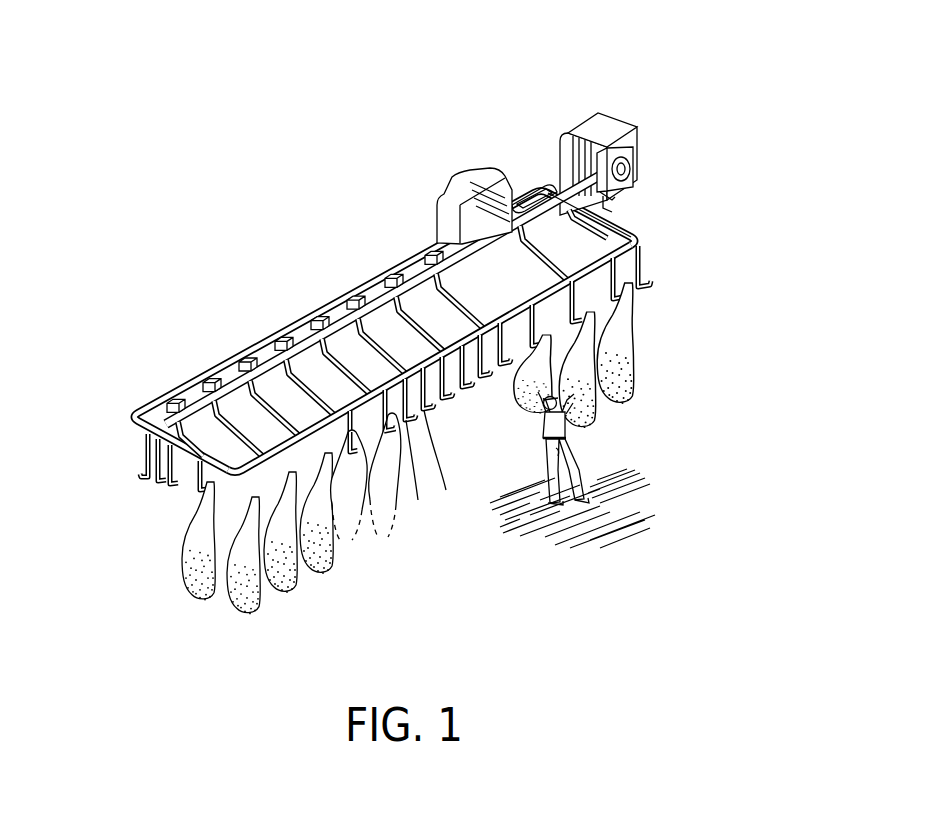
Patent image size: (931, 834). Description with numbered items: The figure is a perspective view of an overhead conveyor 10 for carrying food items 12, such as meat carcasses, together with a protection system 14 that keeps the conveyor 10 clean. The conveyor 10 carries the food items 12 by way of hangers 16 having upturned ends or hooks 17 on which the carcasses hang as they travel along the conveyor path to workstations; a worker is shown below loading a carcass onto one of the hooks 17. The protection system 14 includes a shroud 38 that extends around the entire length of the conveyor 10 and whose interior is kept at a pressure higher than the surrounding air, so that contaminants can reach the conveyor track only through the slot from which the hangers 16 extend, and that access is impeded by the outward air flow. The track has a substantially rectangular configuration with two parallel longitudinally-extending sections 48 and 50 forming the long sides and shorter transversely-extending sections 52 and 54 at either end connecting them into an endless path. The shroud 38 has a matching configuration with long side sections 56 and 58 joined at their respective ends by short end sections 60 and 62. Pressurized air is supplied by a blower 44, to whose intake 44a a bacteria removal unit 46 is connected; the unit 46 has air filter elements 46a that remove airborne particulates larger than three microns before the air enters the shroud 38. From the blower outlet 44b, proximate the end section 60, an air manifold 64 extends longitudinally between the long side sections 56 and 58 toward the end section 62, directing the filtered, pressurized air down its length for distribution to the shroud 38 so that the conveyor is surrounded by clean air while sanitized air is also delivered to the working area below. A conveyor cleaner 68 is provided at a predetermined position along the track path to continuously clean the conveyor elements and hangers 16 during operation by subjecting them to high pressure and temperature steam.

The conveyor 10 is at (430, 284).
The food items 12 is at (240, 614).
The protection system 14 is at (192, 362).
The hangers 16 is at (424, 420).
The hooks 17 is at (648, 285).
The shroud 38 is at (328, 306).
The blower 44 is at (662, 150).
The blower intake 44a is at (620, 150).
The blower outlet 44b is at (618, 202).
The bacteria removal unit 46 is at (618, 114).
The air filter elements 46a is at (592, 112).
The longitudinally-extending track section 48 is at (270, 328).
The longitudinally-extending track section 50 is at (476, 410).
The transversely-extending track section 52 is at (644, 235).
The track transverse section 54 is at (183, 482).
The shroud long side section 56 is at (367, 282).
The shroud long side section 58 is at (406, 422).
The shroud end section 60 is at (641, 218).
The shroud end section 62 is at (157, 482).
The air manifold 64 is at (394, 274).
The conveyor cleaner 68 is at (460, 178).